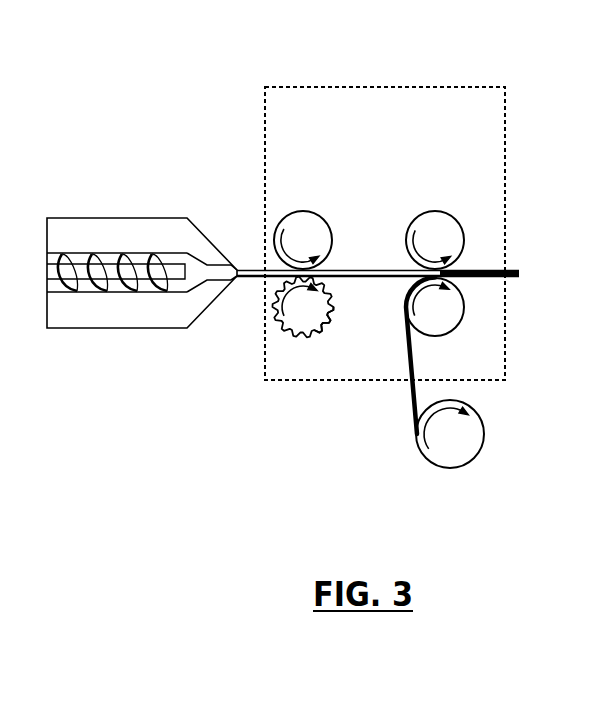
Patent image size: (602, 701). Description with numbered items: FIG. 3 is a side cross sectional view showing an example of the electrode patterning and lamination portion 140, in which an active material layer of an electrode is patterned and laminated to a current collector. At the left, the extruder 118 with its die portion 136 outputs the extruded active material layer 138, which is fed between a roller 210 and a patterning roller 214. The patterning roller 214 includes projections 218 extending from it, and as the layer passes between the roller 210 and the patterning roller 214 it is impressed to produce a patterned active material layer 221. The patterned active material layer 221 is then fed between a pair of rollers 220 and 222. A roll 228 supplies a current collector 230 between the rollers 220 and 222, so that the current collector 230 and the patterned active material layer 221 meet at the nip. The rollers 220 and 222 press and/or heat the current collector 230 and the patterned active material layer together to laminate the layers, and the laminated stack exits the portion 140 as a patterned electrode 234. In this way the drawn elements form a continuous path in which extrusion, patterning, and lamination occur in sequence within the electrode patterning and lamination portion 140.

The extruder 118 is at (120, 217).
The die 136 is at (214, 266).
The extruded active material layer 138 is at (241, 278).
The electrode patterning and lamination portion 140 is at (478, 87).
The roller 210 is at (302, 211).
The patterning roller 214 is at (300, 335).
The projections 218 is at (325, 327).
The roller 220 is at (434, 211).
The patterned active material layer 221 is at (340, 270).
The roller 222 is at (437, 336).
The roll 228 is at (485, 438).
The current collector 230 is at (412, 401).
The patterned electrode 234 is at (519, 270).